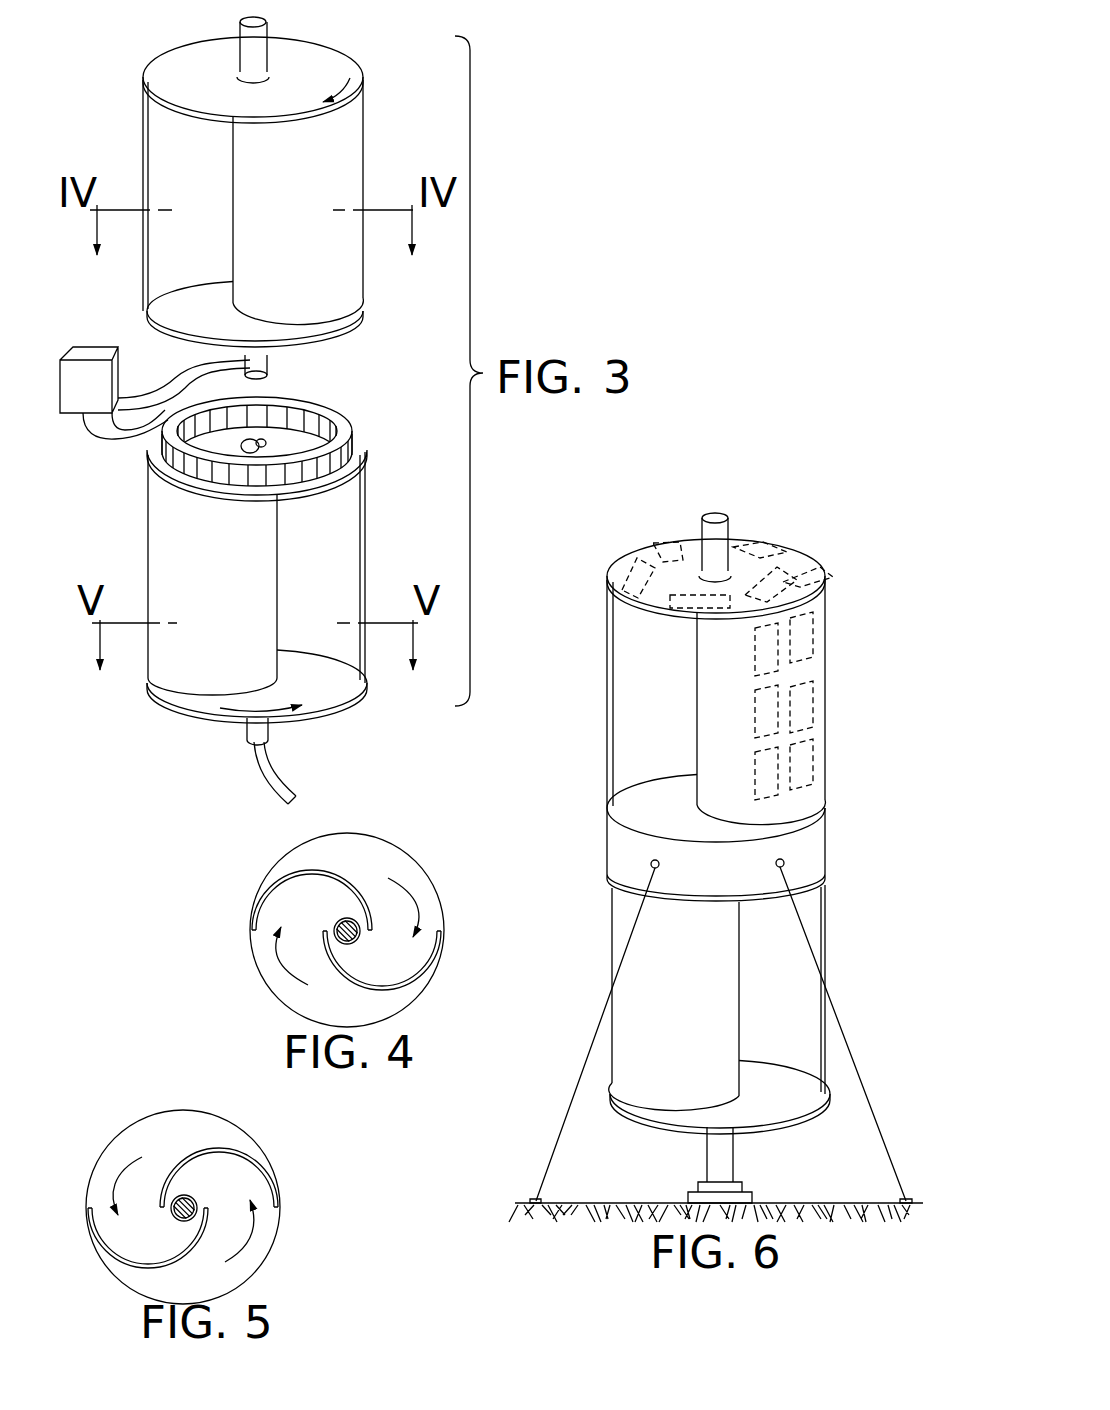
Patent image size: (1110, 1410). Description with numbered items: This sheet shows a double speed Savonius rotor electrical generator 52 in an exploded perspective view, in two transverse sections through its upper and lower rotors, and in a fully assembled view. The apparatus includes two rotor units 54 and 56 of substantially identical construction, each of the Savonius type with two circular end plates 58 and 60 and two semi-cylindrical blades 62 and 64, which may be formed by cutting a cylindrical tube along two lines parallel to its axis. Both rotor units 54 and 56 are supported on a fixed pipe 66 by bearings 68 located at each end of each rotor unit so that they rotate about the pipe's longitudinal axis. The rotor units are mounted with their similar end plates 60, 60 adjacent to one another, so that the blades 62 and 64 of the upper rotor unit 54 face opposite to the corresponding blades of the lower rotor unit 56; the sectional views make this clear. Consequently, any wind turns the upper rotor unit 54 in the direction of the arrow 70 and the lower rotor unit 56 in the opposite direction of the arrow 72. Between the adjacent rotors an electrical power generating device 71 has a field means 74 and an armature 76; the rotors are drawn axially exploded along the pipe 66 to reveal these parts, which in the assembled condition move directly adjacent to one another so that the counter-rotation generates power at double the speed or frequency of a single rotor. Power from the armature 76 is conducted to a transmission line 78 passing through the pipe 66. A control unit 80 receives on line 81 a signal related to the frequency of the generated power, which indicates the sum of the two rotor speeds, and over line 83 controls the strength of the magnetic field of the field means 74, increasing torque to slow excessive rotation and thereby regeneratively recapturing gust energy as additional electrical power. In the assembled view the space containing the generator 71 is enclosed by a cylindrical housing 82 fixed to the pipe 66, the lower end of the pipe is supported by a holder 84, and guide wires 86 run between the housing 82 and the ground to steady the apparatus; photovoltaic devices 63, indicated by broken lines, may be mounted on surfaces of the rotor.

In FIG. 3, the double speed Savonius rotor electrical generator 52 is at (122, 63).
In FIG. 6, the double speed Savonius rotor electrical generator 52 is at (580, 555).
In FIG. 3, the upper rotor unit 54 is at (125, 138).
In FIG. 4, the upper rotor unit 54 is at (445, 883).
In FIG. 6, the upper rotor unit 54 is at (598, 633).
In FIG. 3, the lower rotor unit 56 is at (128, 522).
In FIG. 5, the lower rotor unit 56 is at (83, 1160).
In FIG. 6, the lower rotor unit 56 is at (572, 940).
In FIG. 3, the circular end plate 58 is at (313, 70).
In FIG. 6, the circular end plate 58 is at (803, 568).
In FIG. 3, the circular end plate 60 is at (173, 315).
In FIG. 4, the circular end plate 60 is at (402, 998).
In FIG. 6, the circular end plate 60 is at (777, 825).
In FIG. 3, the blade 62 is at (165, 173).
In FIG. 4, the blade 62 is at (313, 873).
In FIG. 5, the blade 62 is at (207, 1148).
In FIG. 6, the blade 62 is at (640, 687).
In FIG. 6, the photovoltaic devices 63 is at (647, 542).
In FIG. 3, the blade 64 is at (337, 140).
In FIG. 4, the blade 64 is at (360, 988).
In FIG. 5, the blade 64 is at (158, 1268).
In FIG. 6, the blade 64 is at (787, 675).
In FIG. 3, the pipe 66 is at (247, 52).
In FIG. 4, the pipe 66 is at (343, 925).
In FIG. 5, the pipe 66 is at (184, 1200).
In FIG. 6, the pipe 66 is at (718, 543).
In FIG. 3, the bearings 68 is at (240, 75).
In FIG. 4, the bearings 68 is at (352, 937).
In FIG. 5, the bearings 68 is at (196, 1205).
In FIG. 6, the bearings 68 is at (702, 568).
In FIG. 3, the arrow 70 is at (350, 78).
In FIG. 4, the arrow 70 is at (417, 900).
In FIG. 3, the electrical power generating device 71 is at (342, 388).
In FIG. 3, the arrow 72 is at (245, 712).
In FIG. 5, the arrow 72 is at (125, 1177).
In FIG. 3, the field means 74 is at (337, 420).
In FIG. 3, the armature 76 is at (285, 353).
In FIG. 3, the transmission line 78 is at (267, 777).
In FIG. 3, the control unit 80 is at (93, 353).
In FIG. 3, the line 81 is at (152, 380).
In FIG. 6, the cylindrical housing 82 is at (633, 850).
In FIG. 3, the line 83 is at (100, 440).
In FIG. 6, the holder 84 is at (752, 1197).
In FIG. 6, the guide wires 86 is at (570, 1094).